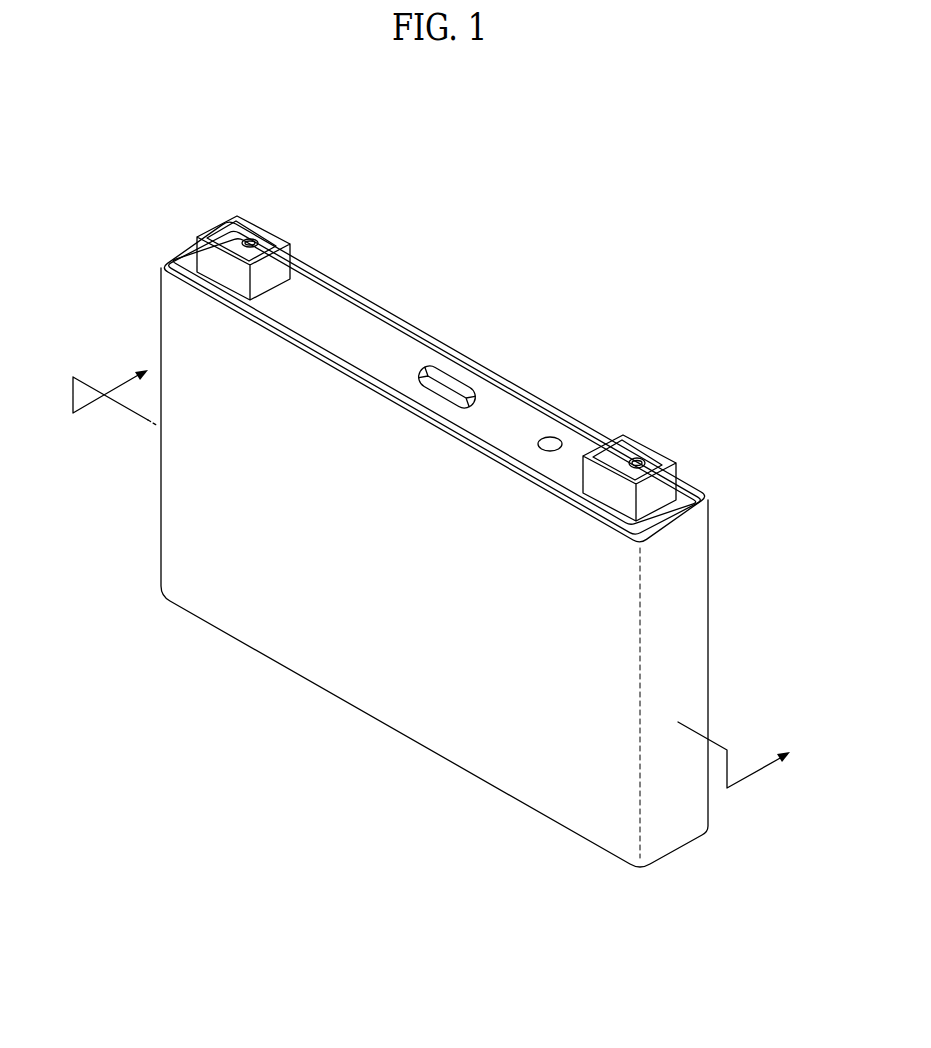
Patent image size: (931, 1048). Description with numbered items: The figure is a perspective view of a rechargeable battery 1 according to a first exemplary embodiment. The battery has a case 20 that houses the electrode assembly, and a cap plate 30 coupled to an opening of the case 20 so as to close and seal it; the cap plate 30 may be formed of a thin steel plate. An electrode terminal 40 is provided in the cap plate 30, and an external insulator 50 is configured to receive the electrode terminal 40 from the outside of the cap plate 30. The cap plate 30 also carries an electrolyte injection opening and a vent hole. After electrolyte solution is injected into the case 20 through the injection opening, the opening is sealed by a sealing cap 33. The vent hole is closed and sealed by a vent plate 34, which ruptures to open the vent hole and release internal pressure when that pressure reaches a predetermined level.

The rechargeable battery 1 is at (561, 227).
The case 20 is at (405, 708).
The cap plate 30 is at (400, 338).
The sealing cap 33 is at (554, 438).
The vent plate 34 is at (457, 373).
The electrode terminal 40 is at (257, 225).
The external insulator 50 is at (283, 259).